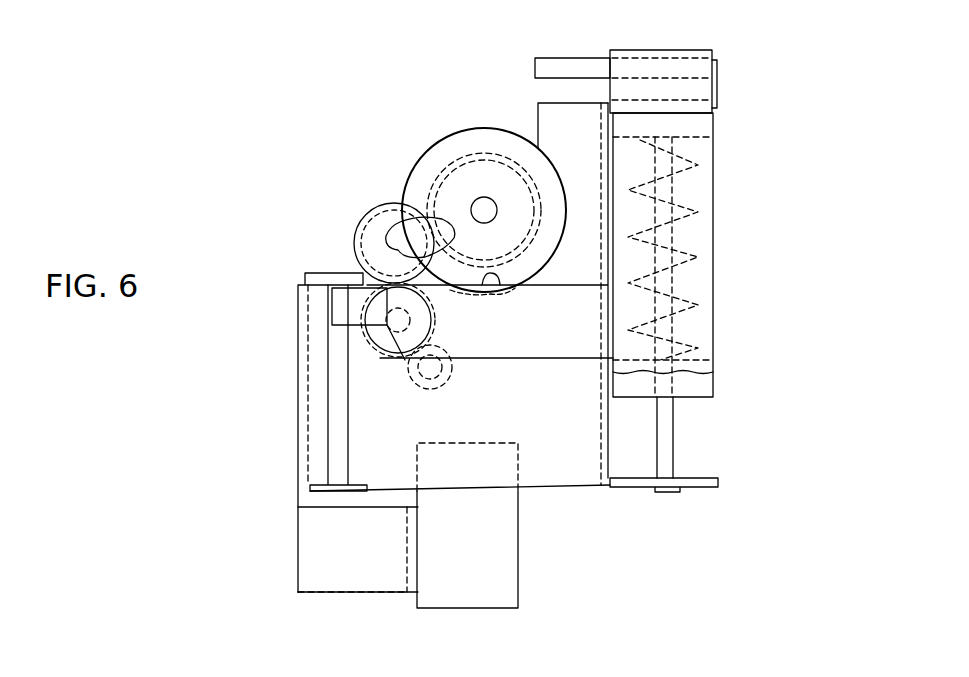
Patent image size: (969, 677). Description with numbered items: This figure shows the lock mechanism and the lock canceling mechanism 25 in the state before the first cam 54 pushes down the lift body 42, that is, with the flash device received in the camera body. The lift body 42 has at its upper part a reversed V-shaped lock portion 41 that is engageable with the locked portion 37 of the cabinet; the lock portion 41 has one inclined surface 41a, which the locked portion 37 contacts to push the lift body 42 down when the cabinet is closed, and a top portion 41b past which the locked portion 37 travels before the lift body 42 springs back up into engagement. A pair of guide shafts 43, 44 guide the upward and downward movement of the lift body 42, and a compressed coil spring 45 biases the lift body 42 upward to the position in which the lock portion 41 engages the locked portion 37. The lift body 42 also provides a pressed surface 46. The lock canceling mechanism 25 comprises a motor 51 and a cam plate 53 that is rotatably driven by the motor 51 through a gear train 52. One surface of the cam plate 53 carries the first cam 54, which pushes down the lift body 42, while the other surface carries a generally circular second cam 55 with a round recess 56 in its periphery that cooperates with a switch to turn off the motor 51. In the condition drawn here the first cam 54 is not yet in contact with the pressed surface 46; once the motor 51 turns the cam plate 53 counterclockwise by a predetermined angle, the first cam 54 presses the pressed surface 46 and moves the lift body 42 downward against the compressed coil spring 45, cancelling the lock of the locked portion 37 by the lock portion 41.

The lock canceling mechanism 25 is at (404, 74).
The motor 51 is at (417, 462).
The gear train 52 is at (362, 206).
The cam plate 53 is at (465, 140).
The first cam 54 is at (445, 265).
The second cam 55 is at (503, 190).
The round recess 56 is at (480, 173).
The locked portion 37 is at (573, 62).
The reversed V-shaped lock portion 41 is at (803, 6).
The inclined surface 41a is at (688, 90).
The top portion 41b is at (683, 48).
The lift body 42 is at (716, 162).
The compressed coil spring 45 is at (698, 257).
The guide shaft 43 is at (665, 432).
The guide shaft 44 is at (335, 438).
The pressed surface 46 is at (498, 287).